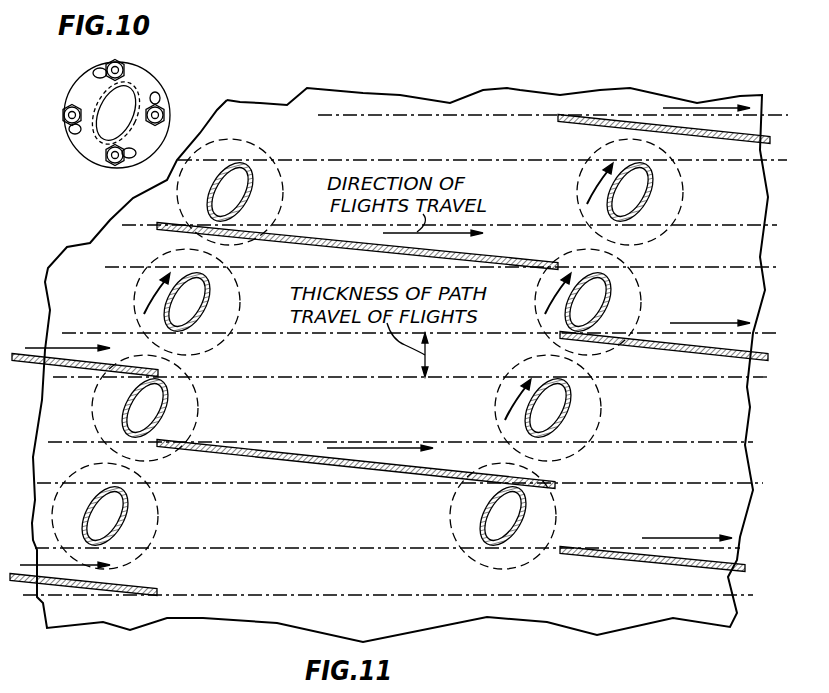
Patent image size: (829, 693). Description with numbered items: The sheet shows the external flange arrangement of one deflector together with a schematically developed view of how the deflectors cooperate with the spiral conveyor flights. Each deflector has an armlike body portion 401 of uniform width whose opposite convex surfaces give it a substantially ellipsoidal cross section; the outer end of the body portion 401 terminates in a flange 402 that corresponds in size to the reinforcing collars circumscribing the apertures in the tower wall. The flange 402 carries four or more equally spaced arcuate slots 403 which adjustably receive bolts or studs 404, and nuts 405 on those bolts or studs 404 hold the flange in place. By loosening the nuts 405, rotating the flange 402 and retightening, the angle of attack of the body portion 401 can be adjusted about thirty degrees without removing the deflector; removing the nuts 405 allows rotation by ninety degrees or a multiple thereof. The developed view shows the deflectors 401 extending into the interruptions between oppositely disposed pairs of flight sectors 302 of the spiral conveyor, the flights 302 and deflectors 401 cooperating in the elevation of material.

In FIG. 10, the body portion 401 is at (100, 128).
In FIG. 11, the body portion 401 is at (385, 347).
In FIG. 11, the flight sector 302 is at (483, 256).
In FIG. 10, the flange 402 is at (147, 78).
In FIG. 10, the arcuate slot 403 is at (158, 97).
In FIG. 10, the bolt or stud 404 is at (95, 75).
In FIG. 10, the nut 405 is at (113, 60).